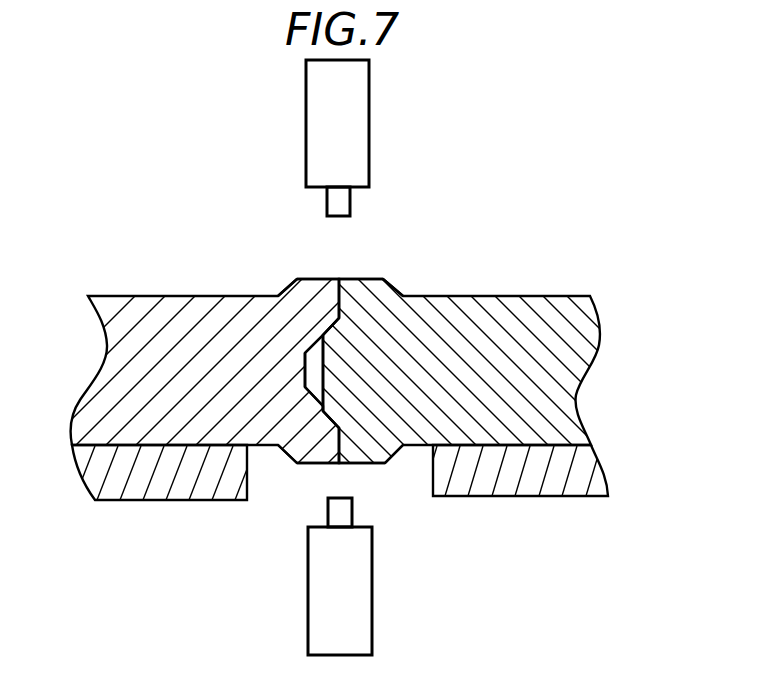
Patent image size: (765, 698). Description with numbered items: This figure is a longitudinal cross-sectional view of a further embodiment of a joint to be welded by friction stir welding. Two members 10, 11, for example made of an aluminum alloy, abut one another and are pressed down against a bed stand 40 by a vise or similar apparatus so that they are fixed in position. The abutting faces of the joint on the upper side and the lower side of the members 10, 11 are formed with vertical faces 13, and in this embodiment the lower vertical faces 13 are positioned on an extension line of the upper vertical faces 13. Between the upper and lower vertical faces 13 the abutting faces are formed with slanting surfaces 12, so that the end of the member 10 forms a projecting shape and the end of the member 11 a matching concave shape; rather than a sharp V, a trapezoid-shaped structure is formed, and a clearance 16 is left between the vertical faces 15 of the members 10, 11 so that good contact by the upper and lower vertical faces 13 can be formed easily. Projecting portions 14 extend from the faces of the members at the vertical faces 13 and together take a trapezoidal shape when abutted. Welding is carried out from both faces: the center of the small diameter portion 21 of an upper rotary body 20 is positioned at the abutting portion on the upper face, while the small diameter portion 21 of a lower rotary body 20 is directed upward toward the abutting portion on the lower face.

The member 10 is at (120, 296).
The member 11 is at (569, 296).
The slanting surfaces 12 is at (323, 333).
The vertical faces 13 is at (336, 303).
The projecting portions 14 is at (295, 279).
The vertical faces 15 is at (305, 370).
The clearance 16 is at (317, 390).
The rotary body 20 is at (369, 117).
The small diameter portion 21 is at (350, 197).
The bed stand 40 is at (106, 501).